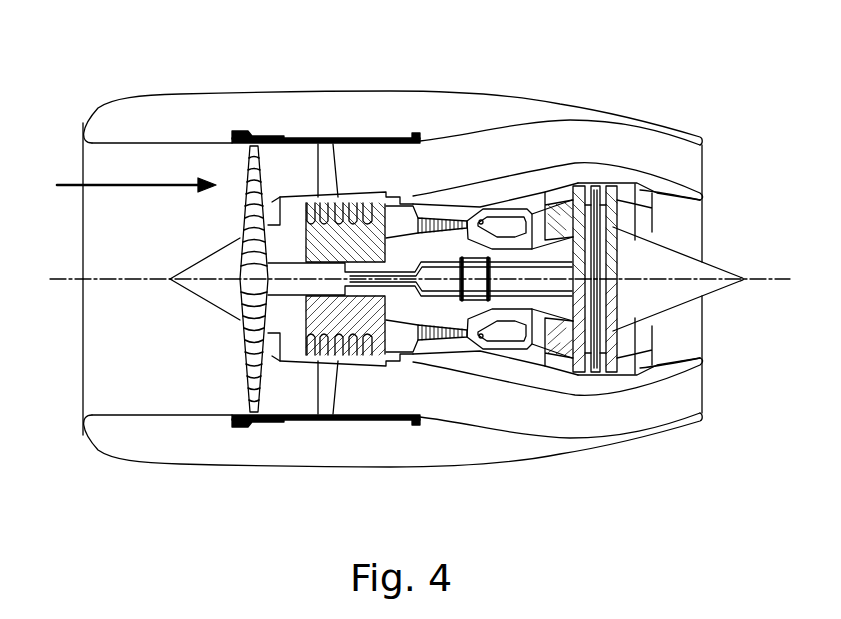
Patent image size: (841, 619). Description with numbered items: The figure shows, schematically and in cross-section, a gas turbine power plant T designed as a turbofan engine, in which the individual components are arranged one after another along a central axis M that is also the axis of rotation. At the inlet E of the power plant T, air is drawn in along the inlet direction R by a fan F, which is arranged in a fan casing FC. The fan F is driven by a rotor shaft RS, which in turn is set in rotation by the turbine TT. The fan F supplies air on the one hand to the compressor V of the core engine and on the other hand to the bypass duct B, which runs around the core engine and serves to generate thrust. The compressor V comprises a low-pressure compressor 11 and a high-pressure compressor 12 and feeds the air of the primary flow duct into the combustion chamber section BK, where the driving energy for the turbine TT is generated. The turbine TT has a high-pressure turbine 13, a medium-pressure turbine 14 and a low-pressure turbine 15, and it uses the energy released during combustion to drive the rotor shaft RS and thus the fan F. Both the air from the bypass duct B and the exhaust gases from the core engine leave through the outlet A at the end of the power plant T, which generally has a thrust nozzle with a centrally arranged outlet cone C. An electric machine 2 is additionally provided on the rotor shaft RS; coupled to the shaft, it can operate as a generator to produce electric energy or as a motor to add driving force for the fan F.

The electric machine 2 is at (463, 302).
The low-pressure compressor 11 is at (350, 190).
The high-pressure compressor 12 is at (443, 200).
The high-pressure turbine 13 is at (547, 360).
The medium-pressure turbine 14 is at (571, 373).
The low-pressure turbine 15 is at (617, 360).
The outlet A is at (692, 210).
The bypass duct B is at (528, 118).
The combustion chamber section BK is at (498, 333).
The outlet cone C is at (707, 288).
The inlet E is at (100, 362).
The fan F is at (242, 378).
The fan casing FC is at (257, 132).
The central axis M is at (767, 281).
The inlet direction R is at (124, 185).
The rotor shaft RS is at (433, 302).
The gas turbine power plant T is at (690, 88).
The turbine TT is at (573, 153).
The compressor V is at (371, 401).